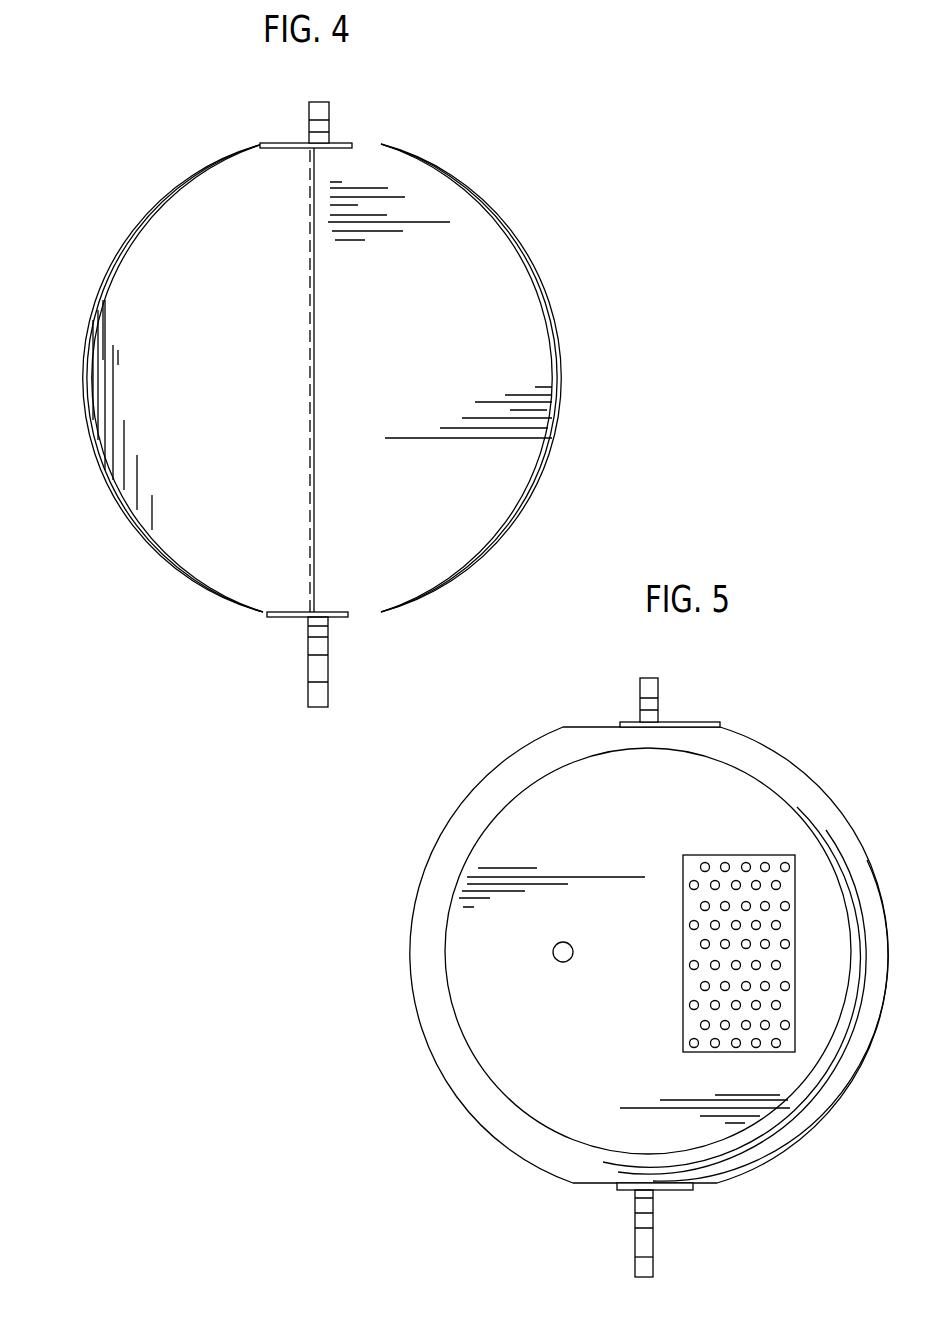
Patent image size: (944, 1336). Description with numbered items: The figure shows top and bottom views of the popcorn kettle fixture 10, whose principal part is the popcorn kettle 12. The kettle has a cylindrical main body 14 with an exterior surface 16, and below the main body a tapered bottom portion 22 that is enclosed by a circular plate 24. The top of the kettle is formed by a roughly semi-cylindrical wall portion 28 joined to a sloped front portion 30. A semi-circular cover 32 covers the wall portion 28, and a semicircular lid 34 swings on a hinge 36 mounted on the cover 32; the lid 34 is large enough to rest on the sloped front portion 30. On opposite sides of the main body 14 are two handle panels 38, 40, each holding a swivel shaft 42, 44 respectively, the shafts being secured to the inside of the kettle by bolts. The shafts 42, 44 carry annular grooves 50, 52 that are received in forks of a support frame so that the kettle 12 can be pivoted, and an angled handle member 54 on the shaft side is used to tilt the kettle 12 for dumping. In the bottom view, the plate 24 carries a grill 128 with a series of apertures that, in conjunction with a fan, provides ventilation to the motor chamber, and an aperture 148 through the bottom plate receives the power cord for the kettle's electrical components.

In FIG. 4, the popcorn kettle fixture 10 is at (114, 216).
In FIG. 5, the popcorn kettle fixture 10 is at (392, 883).
In FIG. 5, the popcorn kettle 12 is at (435, 843).
In FIG. 5, the cylindrical main body 14 is at (418, 939).
In FIG. 5, the exterior surface 16 is at (430, 1061).
In FIG. 5, the tapered bottom portion 22 is at (722, 1133).
In FIG. 5, the circular plate 24 is at (762, 810).
In FIG. 4, the semi-cylindrical wall portion 28 is at (486, 204).
In FIG. 4, the sloped front portion 30 is at (212, 168).
In FIG. 4, the semi-circular cover 32 is at (519, 349).
In FIG. 4, the semicircular lid 34 is at (227, 562).
In FIG. 4, the hinge 36 is at (316, 178).
In FIG. 4, the handle panel 38 is at (308, 136).
In FIG. 5, the handle panel 38 is at (668, 722).
In FIG. 4, the handle panel 40 is at (318, 623).
In FIG. 5, the handle panel 40 is at (630, 1190).
In FIG. 4, the swivel shaft 42 is at (330, 108).
In FIG. 5, the swivel shaft 42 is at (660, 680).
In FIG. 4, the swivel shaft 44 is at (330, 655).
In FIG. 5, the swivel shaft 44 is at (634, 1205).
In FIG. 4, the annular groove 50 is at (330, 126).
In FIG. 5, the annular groove 50 is at (641, 702).
In FIG. 4, the annular groove 52 is at (329, 638).
In FIG. 5, the annular groove 52 is at (657, 1228).
In FIG. 5, the angled handle member 54 is at (657, 1265).
In FIG. 5, the grill 128 is at (798, 876).
In FIG. 5, the aperture 148 is at (552, 955).